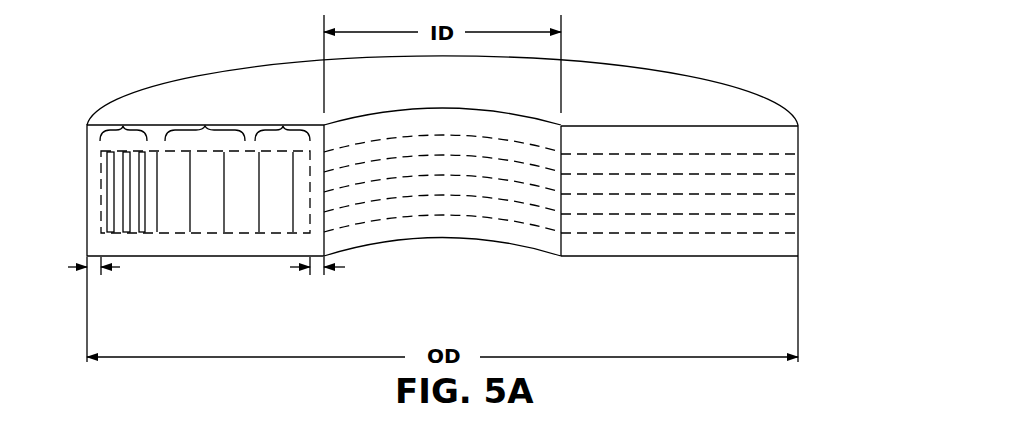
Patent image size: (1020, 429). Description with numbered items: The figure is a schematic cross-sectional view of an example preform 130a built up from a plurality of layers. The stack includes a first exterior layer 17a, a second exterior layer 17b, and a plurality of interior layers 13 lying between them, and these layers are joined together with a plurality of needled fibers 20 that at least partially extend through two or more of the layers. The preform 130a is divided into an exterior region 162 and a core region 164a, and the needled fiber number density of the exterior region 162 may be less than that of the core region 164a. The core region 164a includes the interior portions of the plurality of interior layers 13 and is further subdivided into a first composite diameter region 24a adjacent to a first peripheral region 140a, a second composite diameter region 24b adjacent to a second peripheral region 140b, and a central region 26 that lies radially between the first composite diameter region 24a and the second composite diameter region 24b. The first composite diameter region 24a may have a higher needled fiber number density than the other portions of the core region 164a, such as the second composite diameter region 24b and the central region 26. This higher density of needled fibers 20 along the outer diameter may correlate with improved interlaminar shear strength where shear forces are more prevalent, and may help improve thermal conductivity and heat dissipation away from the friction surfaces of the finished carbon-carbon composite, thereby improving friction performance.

The preform 130a is at (232, 33).
The first composite diameter region 24a is at (124, 121).
The central region 26 is at (201, 167).
The second composite diameter region 24b is at (282, 167).
The second exterior layer 17b is at (670, 138).
The first exterior layer 17a is at (675, 246).
The plurality of interior layers 13 is at (803, 155).
The core region 164a is at (101, 178).
The first peripheral region 140a is at (90, 268).
The second peripheral region 140b is at (319, 268).
The needled fibers 20 is at (260, 213).
The exterior region 162 is at (195, 248).